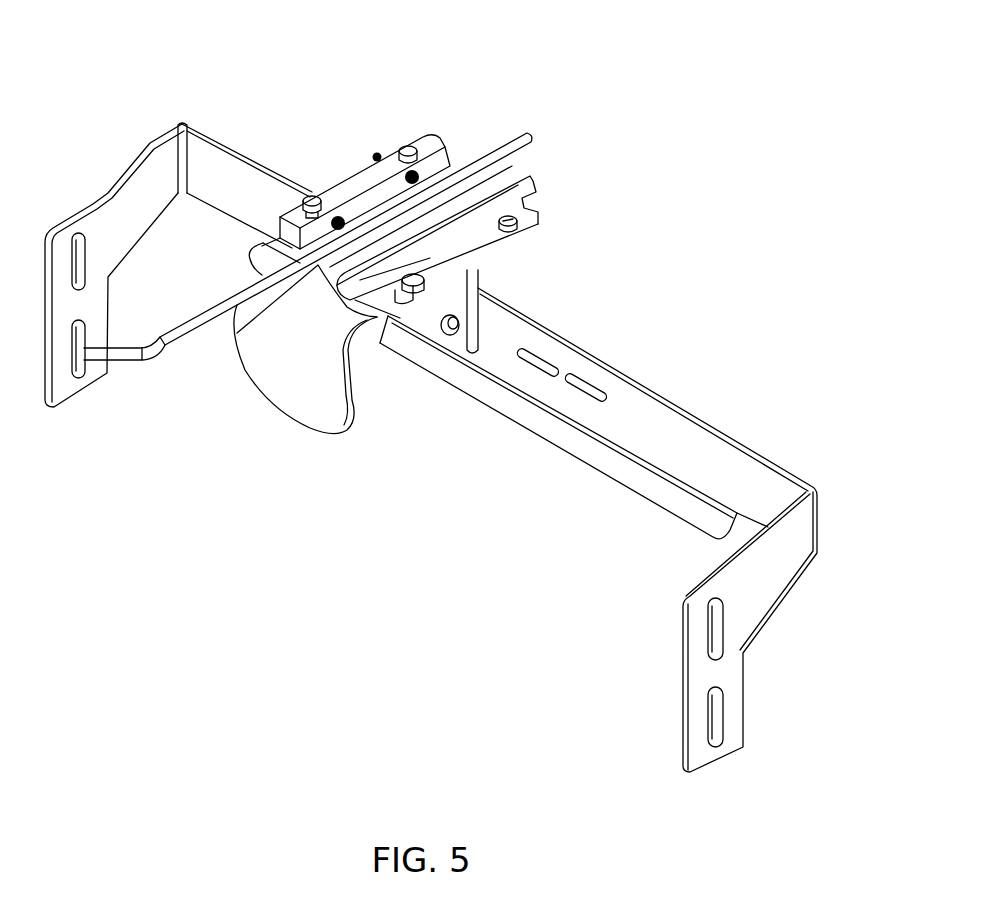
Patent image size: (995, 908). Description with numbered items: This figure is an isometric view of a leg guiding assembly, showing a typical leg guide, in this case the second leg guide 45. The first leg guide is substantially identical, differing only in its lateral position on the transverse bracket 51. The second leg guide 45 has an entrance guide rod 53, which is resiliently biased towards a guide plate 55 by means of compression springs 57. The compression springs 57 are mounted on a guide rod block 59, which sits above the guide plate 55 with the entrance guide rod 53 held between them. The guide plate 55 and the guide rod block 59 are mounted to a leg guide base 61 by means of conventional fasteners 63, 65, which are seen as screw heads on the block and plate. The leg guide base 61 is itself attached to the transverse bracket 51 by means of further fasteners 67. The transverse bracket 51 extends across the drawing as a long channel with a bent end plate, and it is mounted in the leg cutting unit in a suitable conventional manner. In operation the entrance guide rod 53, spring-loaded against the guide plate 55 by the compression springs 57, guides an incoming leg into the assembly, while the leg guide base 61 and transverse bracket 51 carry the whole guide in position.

The second leg guide 45 is at (311, 385).
The transverse bracket 51 is at (761, 591).
The entrance guide rod 53 is at (172, 340).
The guide plate 55 is at (500, 201).
The compression springs 57 is at (432, 160).
The guide rod block 59 is at (355, 183).
The leg guide base 61 is at (427, 324).
The fastener 63 is at (312, 196).
The fastener 65 is at (540, 229).
The further fasteners 67 is at (452, 334).